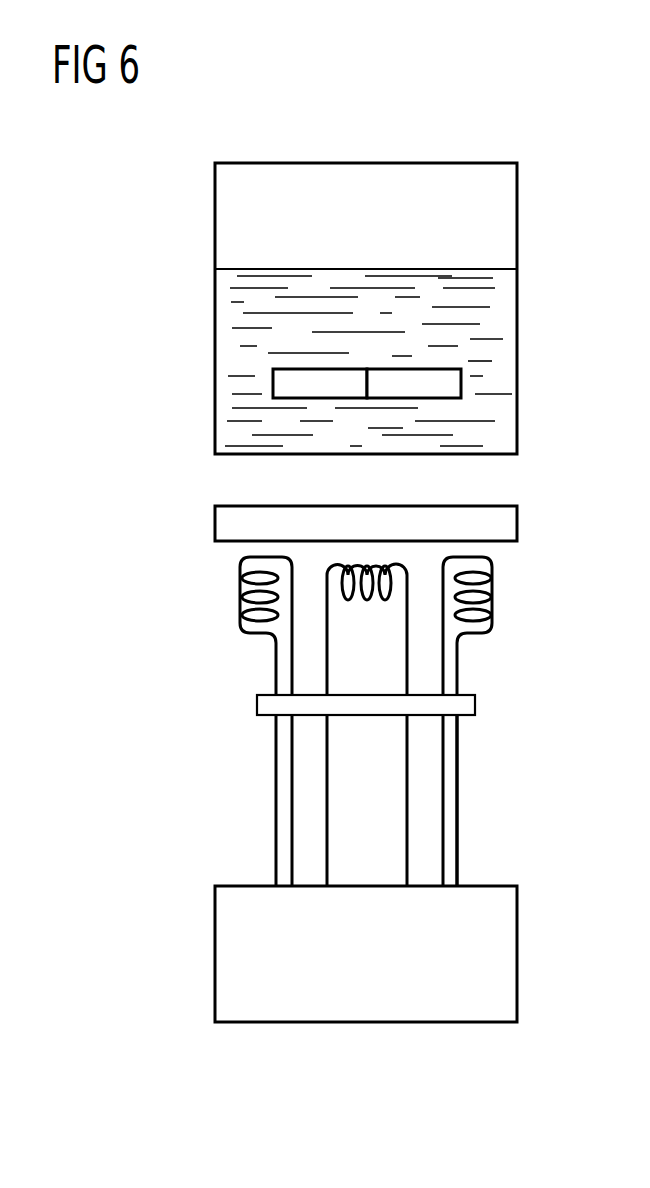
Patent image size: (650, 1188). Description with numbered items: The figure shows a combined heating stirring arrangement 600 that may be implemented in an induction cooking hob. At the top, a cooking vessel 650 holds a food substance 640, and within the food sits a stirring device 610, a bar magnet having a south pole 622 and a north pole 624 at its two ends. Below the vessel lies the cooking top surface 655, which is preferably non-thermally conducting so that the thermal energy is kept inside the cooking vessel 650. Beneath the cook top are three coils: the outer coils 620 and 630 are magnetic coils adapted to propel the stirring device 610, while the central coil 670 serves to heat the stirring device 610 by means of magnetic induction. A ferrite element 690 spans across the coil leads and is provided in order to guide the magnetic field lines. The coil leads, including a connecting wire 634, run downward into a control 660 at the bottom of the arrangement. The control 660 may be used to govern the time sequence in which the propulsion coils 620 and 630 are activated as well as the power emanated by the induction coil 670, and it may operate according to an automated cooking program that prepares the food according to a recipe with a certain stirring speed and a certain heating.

The combined heating stirring arrangement 600 is at (443, 138).
The cooking vessel 650 is at (214, 212).
The food substance 640 is at (490, 316).
The stirring device 610 is at (362, 407).
The south pole 622 is at (272, 385).
The north pole 624 is at (462, 384).
The cooking top surface 655 is at (493, 524).
The magnetic coil for propulsion 620 is at (240, 606).
The magnetic coil for propulsion 630 is at (493, 607).
The magnetic coil for induction heating 670 is at (370, 590).
The ferrite element 690 is at (468, 705).
The connecting wire 634 is at (458, 822).
The control 660 is at (502, 957).